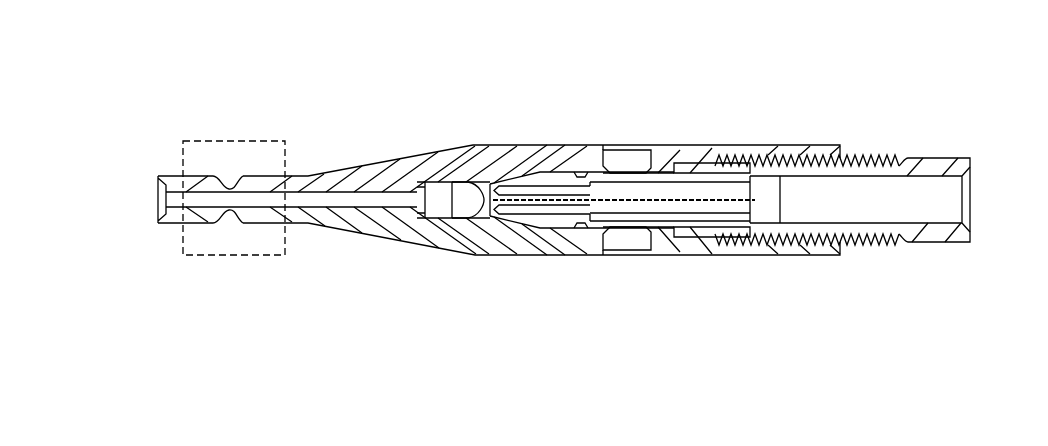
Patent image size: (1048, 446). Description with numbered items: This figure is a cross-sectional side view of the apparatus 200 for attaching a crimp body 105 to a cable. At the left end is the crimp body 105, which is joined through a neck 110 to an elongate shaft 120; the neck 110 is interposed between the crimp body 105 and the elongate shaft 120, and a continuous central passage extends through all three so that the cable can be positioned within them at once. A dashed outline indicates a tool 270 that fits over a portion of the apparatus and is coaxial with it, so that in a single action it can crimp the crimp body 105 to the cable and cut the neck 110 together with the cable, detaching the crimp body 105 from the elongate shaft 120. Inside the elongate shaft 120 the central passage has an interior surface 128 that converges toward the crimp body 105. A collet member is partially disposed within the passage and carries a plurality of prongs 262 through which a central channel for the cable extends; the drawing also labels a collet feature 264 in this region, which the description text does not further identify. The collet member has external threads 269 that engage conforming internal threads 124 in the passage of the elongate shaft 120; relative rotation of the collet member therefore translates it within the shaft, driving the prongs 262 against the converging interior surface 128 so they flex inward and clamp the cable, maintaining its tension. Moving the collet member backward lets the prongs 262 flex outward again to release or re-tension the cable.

The apparatus 200 is at (120, 85).
The crimp body 105 is at (172, 238).
The neck 110 is at (229, 224).
The tool 270 is at (272, 141).
The interior surface 128 is at (483, 218).
The collet body 264 is at (520, 176).
The prongs 262 is at (560, 184).
The elongate shaft 120 is at (686, 150).
The internal threads 124 is at (766, 158).
The external threads 269 is at (855, 158).